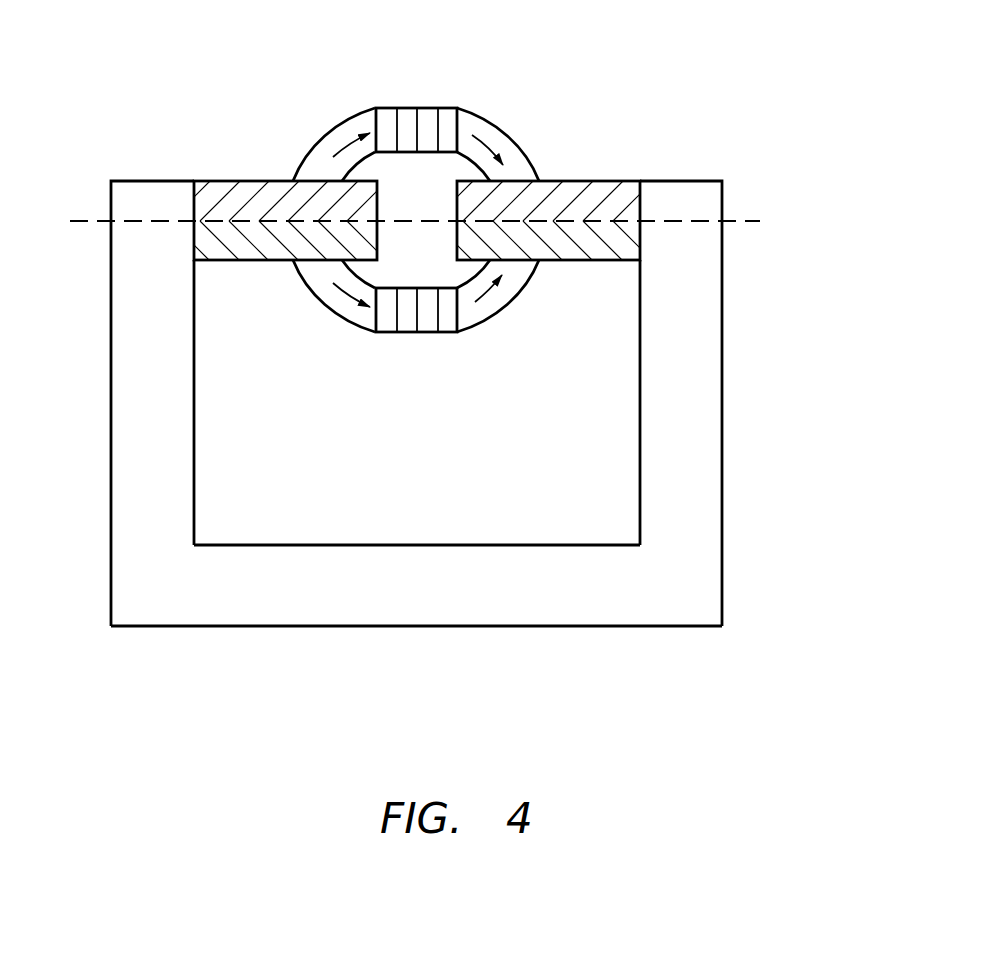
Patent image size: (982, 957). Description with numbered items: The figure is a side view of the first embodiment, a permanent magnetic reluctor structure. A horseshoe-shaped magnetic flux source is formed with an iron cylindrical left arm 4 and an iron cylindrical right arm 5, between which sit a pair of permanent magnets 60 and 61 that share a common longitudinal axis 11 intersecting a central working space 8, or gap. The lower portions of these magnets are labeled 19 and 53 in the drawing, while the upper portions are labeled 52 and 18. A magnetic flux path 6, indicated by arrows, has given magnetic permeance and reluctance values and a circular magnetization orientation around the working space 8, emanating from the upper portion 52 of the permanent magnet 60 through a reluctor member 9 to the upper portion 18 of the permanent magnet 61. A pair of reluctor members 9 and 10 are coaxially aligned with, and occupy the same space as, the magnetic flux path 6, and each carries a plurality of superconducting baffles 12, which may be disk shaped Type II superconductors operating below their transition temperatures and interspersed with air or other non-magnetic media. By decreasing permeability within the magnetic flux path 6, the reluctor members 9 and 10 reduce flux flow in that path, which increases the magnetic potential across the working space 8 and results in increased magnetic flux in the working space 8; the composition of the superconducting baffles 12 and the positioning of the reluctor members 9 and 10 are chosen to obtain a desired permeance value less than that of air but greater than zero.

The left arm 4 is at (123, 413).
The right arm 5 is at (712, 412).
The magnetic flux path 6 is at (336, 126).
The working space 8 is at (413, 243).
The reluctor member 9 is at (403, 110).
The reluctor member 10 is at (428, 323).
The longitudinal axis 11 is at (815, 42).
The superconducting baffles 12 is at (452, 117).
The upper portion of permanent magnet 18 is at (590, 182).
The left lower permanent magnet 19 is at (265, 243).
The upper portion of permanent magnet 52 is at (270, 182).
The right lower permanent magnet 53 is at (585, 245).
The permanent magnet 60 is at (233, 167).
The permanent magnet 61 is at (607, 162).